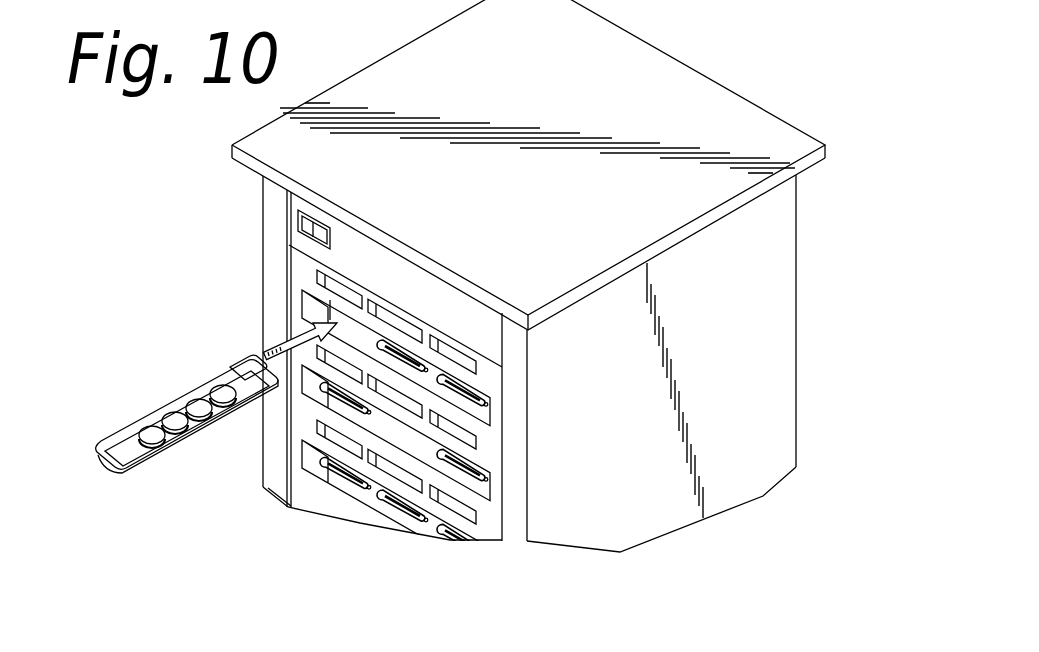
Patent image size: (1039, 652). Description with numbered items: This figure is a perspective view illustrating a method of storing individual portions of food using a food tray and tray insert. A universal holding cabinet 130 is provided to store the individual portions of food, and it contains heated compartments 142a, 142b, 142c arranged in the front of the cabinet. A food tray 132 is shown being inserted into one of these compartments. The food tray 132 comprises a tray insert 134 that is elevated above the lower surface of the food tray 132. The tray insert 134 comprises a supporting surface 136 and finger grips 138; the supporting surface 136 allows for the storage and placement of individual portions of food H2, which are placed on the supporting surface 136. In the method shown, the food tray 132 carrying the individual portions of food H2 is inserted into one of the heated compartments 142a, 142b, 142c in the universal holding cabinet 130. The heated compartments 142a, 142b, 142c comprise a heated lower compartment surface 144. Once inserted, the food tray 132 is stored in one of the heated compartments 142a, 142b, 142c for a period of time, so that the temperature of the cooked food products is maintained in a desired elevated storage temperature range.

The universal holding cabinet 130 is at (452, 319).
The food tray 132 is at (153, 441).
The tray insert 134 is at (115, 430).
The supporting surface 136 is at (213, 372).
The finger grips 138 is at (236, 365).
The heated compartment 142a is at (357, 328).
The heated compartment 142b is at (478, 482).
The heated compartment 142c is at (422, 522).
The heated lower compartment surface 144 is at (305, 305).
The individual portions of food H2 is at (183, 442).